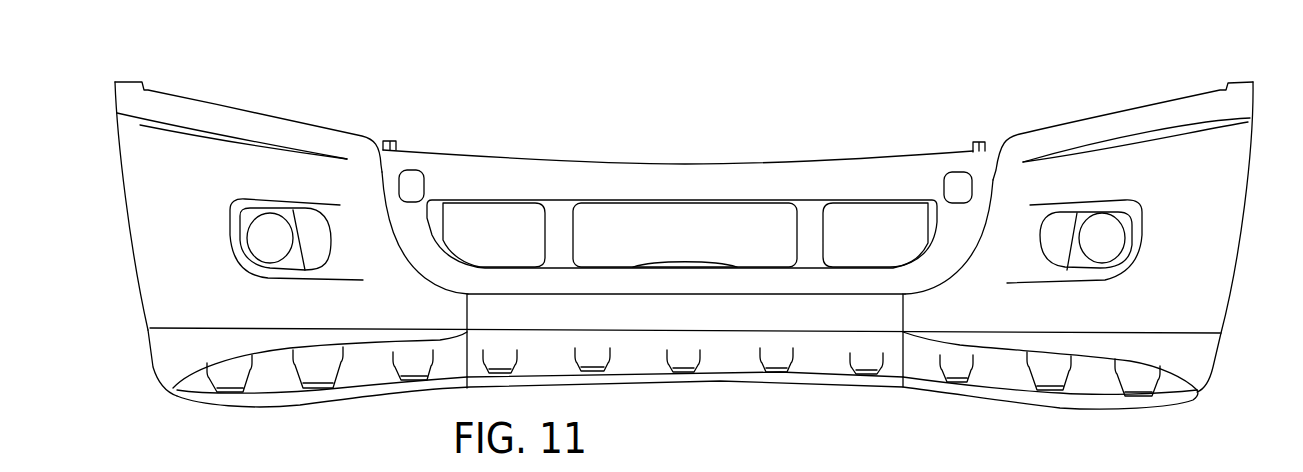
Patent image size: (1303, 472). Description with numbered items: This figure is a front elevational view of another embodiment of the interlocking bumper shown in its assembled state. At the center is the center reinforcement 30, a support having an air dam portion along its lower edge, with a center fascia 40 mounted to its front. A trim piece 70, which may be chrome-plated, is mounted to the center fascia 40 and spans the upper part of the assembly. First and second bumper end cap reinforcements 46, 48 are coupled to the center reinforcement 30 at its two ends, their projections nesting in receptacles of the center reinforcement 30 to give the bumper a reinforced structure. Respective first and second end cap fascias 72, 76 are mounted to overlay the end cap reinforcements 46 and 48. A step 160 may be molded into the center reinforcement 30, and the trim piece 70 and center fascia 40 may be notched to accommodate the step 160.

The center reinforcement 30 is at (728, 362).
The center fascia 40 is at (638, 310).
The first bumper end cap reinforcement 46 is at (1198, 357).
The second bumper end cap reinforcement 48 is at (155, 363).
The trim piece 70 is at (760, 176).
The first end cap fascia 72 is at (1160, 158).
The second end cap fascia 76 is at (303, 137).
The step 160 is at (699, 260).